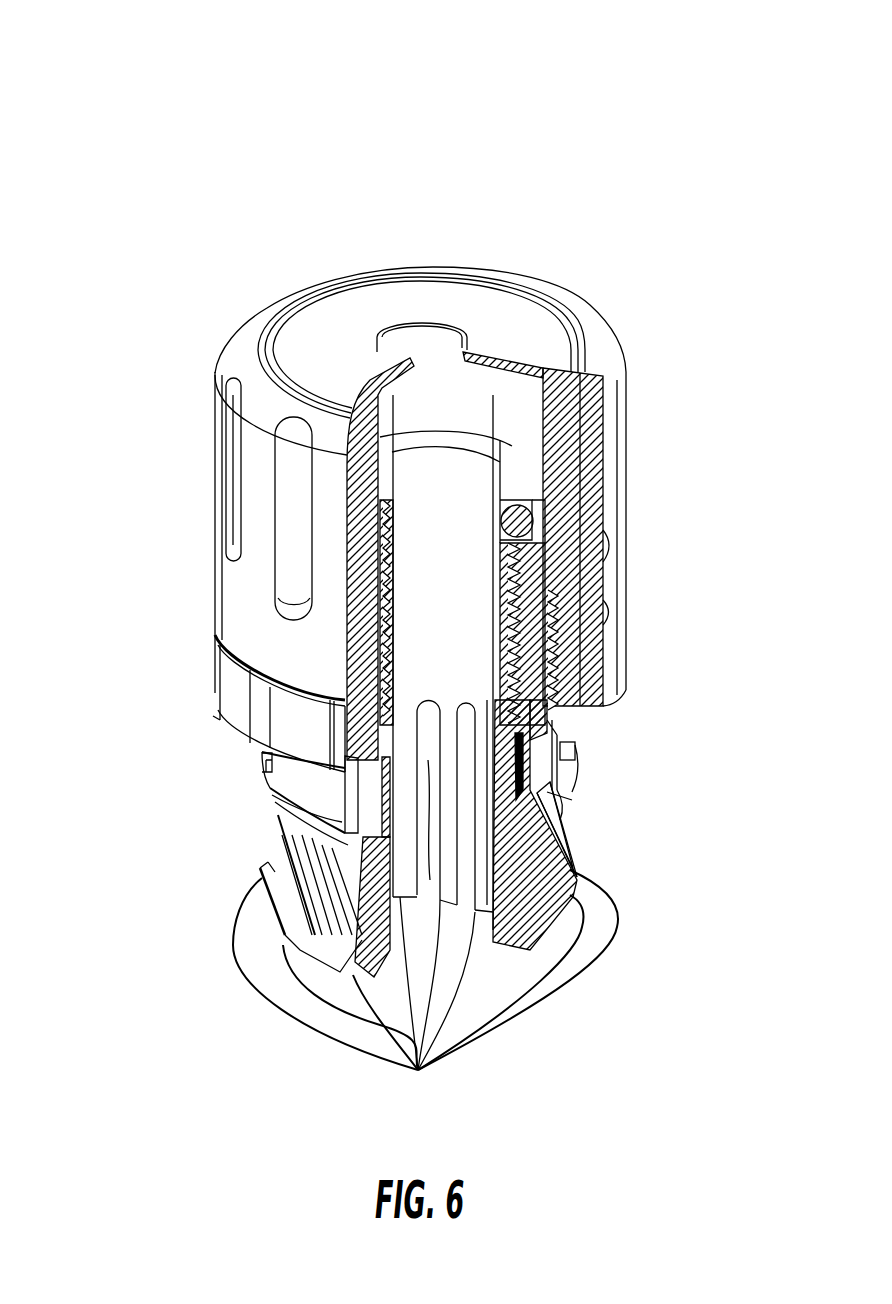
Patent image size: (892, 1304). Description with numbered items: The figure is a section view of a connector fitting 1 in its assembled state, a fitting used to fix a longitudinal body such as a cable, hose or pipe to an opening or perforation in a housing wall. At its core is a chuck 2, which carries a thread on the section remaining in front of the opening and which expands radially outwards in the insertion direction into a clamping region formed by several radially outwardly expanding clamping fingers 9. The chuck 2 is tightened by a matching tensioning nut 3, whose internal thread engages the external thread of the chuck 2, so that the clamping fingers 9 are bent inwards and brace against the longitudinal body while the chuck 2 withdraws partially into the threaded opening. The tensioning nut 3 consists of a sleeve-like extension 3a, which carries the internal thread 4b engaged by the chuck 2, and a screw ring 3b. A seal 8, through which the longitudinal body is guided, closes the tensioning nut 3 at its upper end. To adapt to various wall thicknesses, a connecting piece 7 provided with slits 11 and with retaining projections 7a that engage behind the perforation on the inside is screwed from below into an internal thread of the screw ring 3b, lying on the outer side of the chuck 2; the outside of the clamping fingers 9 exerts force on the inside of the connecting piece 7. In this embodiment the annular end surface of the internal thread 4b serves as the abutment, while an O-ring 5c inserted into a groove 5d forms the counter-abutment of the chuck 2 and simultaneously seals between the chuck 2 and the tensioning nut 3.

The connector fitting 1 is at (160, 122).
The chuck 2 is at (455, 480).
The tensioning nut 3 is at (672, 418).
The sleeve-like extension 3a is at (600, 490).
The screw ring 3b is at (590, 688).
The internal thread 4b is at (540, 602).
The O-ring 5c is at (512, 503).
The groove 5d is at (478, 505).
The connecting piece 7 is at (563, 772).
The retaining projections 7a is at (560, 796).
The seal 8 is at (515, 310).
The clamping fingers 9 is at (425, 993).
The slits 11 is at (570, 752).